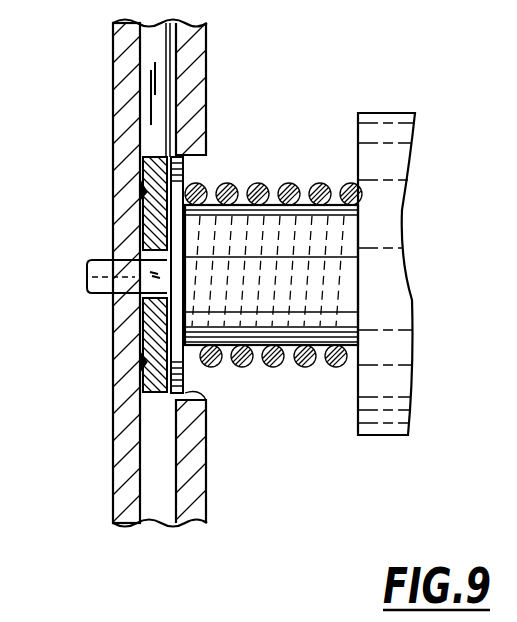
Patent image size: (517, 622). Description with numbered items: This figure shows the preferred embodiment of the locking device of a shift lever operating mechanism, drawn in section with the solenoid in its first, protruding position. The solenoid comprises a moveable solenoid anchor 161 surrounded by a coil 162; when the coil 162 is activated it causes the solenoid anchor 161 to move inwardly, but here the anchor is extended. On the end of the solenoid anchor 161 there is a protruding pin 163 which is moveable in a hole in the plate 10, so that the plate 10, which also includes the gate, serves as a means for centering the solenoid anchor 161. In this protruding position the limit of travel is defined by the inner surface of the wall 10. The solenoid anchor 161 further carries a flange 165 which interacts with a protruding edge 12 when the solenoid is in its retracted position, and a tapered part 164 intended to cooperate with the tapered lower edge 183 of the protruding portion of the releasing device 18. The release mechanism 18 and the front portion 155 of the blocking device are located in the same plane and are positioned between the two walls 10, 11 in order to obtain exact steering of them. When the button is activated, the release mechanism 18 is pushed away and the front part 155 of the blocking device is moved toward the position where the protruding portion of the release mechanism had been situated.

The plate 10 is at (125, 480).
The wall 11 is at (200, 490).
The protruding edge 12 is at (196, 393).
The releasing device 18 is at (153, 58).
The front portion of the blocking device 155 is at (143, 234).
The solenoid anchor 161 is at (284, 322).
The coil 162 is at (356, 420).
The pin 163 is at (87, 283).
The tapered part 164 is at (138, 366).
The flange 165 is at (178, 393).
The lower edge 183 is at (140, 202).